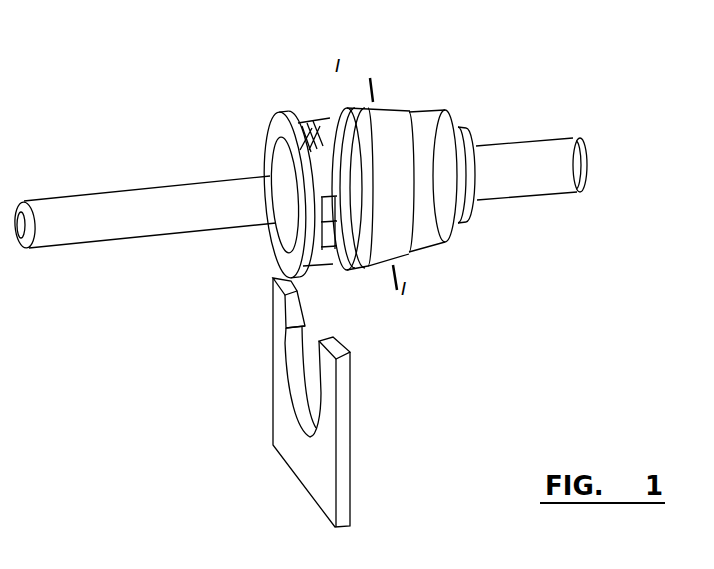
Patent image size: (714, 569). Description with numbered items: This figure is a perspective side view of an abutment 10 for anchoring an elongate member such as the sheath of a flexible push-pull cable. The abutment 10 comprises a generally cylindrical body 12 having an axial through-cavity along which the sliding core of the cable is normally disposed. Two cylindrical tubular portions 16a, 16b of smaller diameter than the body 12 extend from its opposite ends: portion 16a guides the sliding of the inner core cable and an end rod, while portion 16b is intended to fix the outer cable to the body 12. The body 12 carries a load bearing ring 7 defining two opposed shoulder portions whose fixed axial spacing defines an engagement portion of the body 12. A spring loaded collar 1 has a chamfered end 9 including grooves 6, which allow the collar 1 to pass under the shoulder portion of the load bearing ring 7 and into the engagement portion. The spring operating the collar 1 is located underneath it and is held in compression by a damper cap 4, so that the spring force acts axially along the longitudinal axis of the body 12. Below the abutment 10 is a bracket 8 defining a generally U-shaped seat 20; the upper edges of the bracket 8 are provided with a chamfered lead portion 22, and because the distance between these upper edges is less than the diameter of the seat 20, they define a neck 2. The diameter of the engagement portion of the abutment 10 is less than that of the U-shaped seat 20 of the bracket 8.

The spring loaded collar 1 is at (395, 183).
The neck 2 is at (308, 347).
The damper cap 4 is at (445, 187).
The grooves 6 is at (329, 213).
The load bearing ring 7 is at (357, 266).
The bracket 8 is at (280, 320).
The chamfered end 9 is at (317, 157).
The abutment 10 is at (398, 92).
The body 12 is at (420, 257).
The cylindrical tubular portion 16a is at (142, 210).
The cylindrical tubular portion 16b is at (513, 158).
The U-shaped seat 20 is at (308, 402).
The chamfered lead portion 22 is at (297, 293).